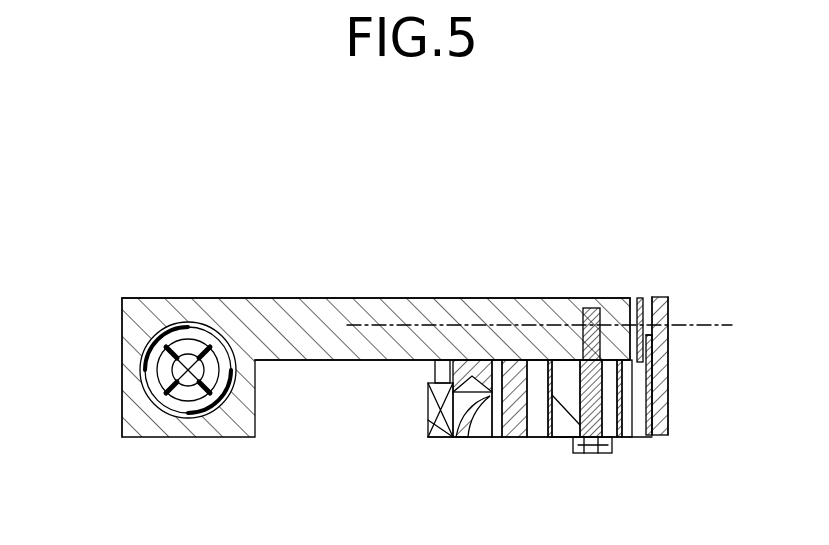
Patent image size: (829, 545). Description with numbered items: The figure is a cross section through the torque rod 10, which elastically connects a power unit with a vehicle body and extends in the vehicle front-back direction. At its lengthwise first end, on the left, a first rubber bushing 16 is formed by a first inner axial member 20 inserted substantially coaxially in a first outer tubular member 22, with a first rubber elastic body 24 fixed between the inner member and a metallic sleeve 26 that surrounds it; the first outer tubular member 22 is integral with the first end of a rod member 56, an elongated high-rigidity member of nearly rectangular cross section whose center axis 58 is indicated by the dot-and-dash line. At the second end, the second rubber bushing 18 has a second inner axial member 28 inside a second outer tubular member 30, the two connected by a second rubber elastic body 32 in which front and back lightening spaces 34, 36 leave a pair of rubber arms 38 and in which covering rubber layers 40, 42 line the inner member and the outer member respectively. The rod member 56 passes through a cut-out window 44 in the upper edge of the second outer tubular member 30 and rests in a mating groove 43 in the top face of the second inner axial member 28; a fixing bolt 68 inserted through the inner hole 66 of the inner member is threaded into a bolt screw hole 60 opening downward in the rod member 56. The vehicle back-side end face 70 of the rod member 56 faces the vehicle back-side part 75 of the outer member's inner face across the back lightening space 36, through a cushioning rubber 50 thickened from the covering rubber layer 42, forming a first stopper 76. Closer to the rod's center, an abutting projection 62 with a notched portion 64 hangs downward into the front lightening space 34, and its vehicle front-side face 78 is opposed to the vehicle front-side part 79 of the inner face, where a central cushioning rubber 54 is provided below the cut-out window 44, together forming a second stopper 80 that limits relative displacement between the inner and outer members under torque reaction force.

The torque rod 10 is at (696, 216).
The first rubber bushing 16 is at (104, 286).
The second rubber bushing 18 is at (694, 280).
The first inner axial member 20 is at (186, 352).
The first outer tubular member 22 is at (130, 370).
The first rubber elastic body 24 is at (226, 410).
The metallic sleeve 26 is at (178, 420).
The second inner axial member 28 is at (565, 437).
The second outer tubular member 30 is at (674, 366).
The second rubber elastic body 32 is at (662, 392).
The lightening space 34 is at (528, 437).
The lightening space 36 is at (636, 420).
The rubber arm 38 is at (527, 352).
The covering rubber layer 40 is at (572, 345).
The covering rubber layer 42 is at (656, 414).
The mating groove 43 is at (560, 375).
The cut-out window 44 is at (435, 372).
The cushioning rubber 50 is at (668, 312).
The central cushioning rubber 54 is at (484, 437).
The rod member 56 is at (323, 293).
The center axis 58 is at (735, 325).
The bolt screw hole 60 is at (591, 308).
The abutting projection 62 is at (510, 440).
The notched portion 64 is at (453, 437).
The inner hole 66 is at (592, 453).
The fixing bolt 68 is at (598, 453).
The vehicle back-side end face 70 is at (640, 298).
The vehicle back-side part 75 is at (650, 340).
The first stopper 76 is at (654, 288).
The vehicle front-side face 78 is at (445, 400).
The vehicle front-side part 79 is at (448, 422).
The second stopper 80 is at (470, 372).